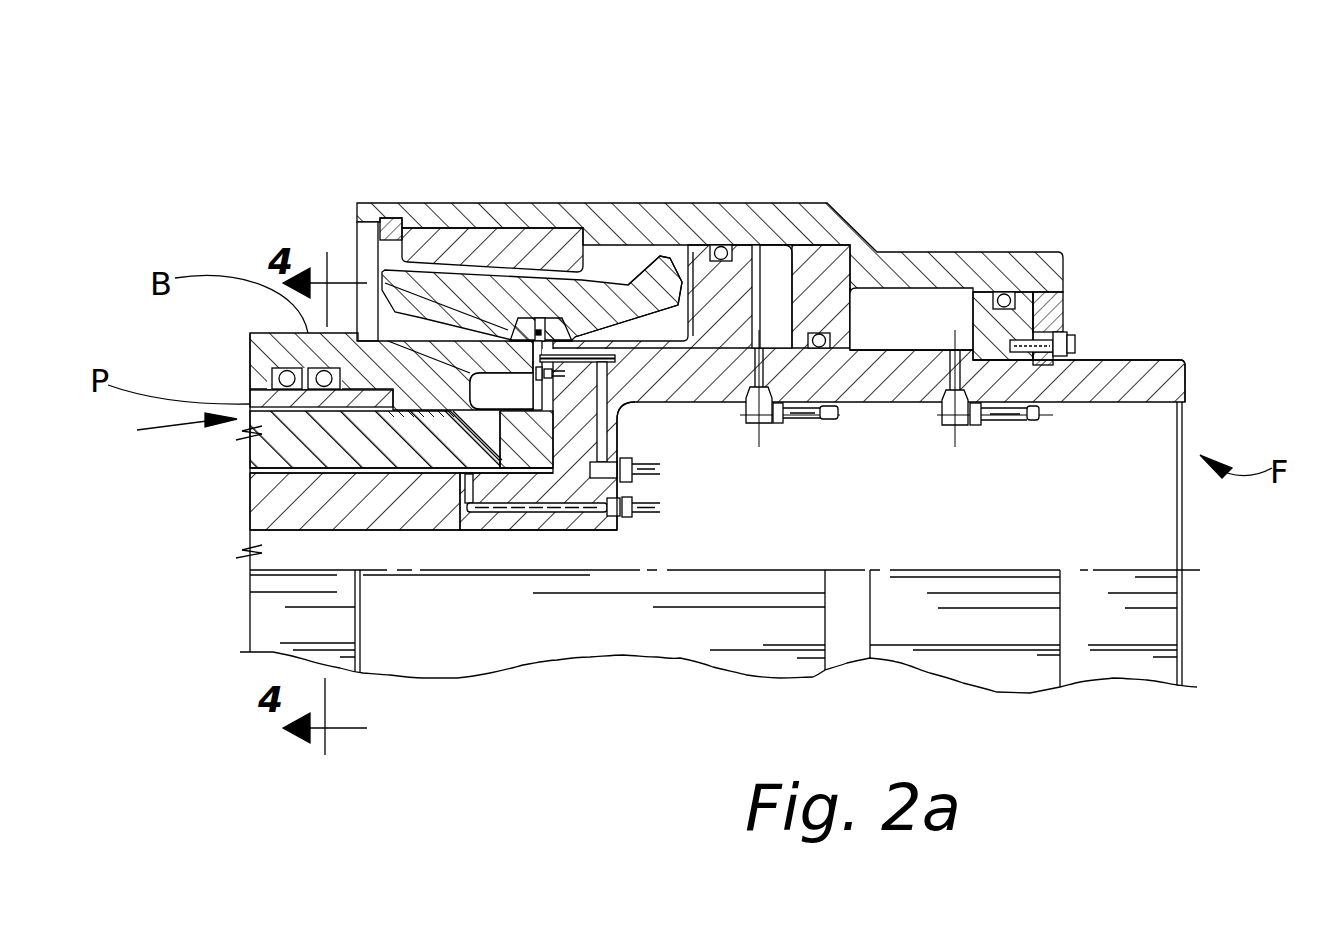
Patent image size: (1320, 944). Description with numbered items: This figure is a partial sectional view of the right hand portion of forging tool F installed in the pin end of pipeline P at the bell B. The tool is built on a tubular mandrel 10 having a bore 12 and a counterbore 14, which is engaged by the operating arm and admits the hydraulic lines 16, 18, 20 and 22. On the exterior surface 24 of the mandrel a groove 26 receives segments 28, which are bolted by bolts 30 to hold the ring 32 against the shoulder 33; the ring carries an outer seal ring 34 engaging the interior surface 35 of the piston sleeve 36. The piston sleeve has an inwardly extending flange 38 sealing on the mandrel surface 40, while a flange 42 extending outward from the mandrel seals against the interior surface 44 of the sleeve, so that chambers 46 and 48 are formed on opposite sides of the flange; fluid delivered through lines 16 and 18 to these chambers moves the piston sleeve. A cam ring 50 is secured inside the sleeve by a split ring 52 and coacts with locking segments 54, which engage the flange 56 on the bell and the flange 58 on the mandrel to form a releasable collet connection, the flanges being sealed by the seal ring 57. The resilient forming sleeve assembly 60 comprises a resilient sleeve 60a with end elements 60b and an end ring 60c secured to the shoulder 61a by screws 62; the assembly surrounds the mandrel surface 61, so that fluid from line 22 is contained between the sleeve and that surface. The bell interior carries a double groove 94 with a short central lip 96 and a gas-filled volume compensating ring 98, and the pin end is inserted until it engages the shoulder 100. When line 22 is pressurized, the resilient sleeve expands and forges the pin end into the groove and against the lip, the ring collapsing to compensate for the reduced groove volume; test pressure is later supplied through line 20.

The tubular mandrel 10 is at (1188, 383).
The bore 12 is at (440, 528).
The counterbore 14 is at (1065, 403).
The hydraulic line 16 is at (1003, 422).
The hydraulic line 18 is at (815, 422).
The hydraulic line 20 is at (660, 470).
The hydraulic line 22 is at (660, 510).
The exterior surface 24 is at (1137, 362).
The groove 26 is at (1045, 355).
The segments 28 is at (1040, 332).
The bolts 30 is at (1073, 332).
The ring 32 is at (1048, 310).
The shoulder 33 is at (1070, 335).
The outer seal ring 34 is at (1006, 290).
The interior surface 35 is at (955, 290).
The piston sleeve 36 is at (877, 282).
The inwardly extending flange 38 is at (927, 310).
The surface 40 is at (957, 350).
The flange 42 is at (758, 280).
The interior surface 44 is at (722, 244).
The chamber 46 is at (922, 344).
The chamber 48 is at (775, 262).
The cam ring 50 is at (503, 262).
The split ring 52 is at (388, 216).
The locking segments 54 is at (617, 280).
The flange 56 is at (540, 312).
The seal ring 57 is at (356, 270).
The flange 58 is at (573, 318).
The resilient forming sleeve assembly 60 is at (172, 429).
The resilient sleeve 60a is at (430, 461).
The end elements 60b is at (378, 527).
The end ring 60c is at (605, 465).
The surface 61 is at (250, 461).
The shoulder 61a is at (600, 440).
The screws 62 is at (472, 388).
The interior groove 94 is at (268, 373).
The central lip 96 is at (250, 432).
The volume compensating ring 98 is at (272, 378).
The shoulder 100 is at (250, 395).